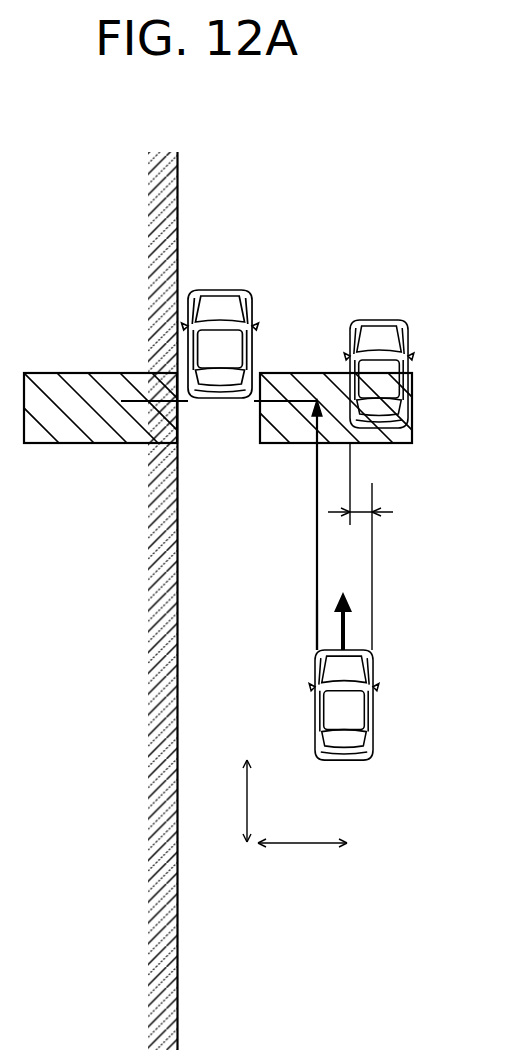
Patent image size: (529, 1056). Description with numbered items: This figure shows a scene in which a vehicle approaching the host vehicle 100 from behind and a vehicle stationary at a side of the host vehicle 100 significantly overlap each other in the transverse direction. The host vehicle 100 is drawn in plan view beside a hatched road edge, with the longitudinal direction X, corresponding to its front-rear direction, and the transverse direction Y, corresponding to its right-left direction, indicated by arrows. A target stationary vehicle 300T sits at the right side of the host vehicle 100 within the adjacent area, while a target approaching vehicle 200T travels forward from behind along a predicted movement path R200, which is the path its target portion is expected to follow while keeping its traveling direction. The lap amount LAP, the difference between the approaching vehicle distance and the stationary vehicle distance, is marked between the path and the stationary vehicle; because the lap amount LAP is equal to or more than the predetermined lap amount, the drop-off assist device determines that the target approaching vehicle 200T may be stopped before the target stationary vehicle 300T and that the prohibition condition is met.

The host vehicle 100 is at (217, 289).
The target stationary vehicle 300T is at (379, 319).
The target approaching vehicle 200T is at (344, 764).
The lap amount LAP is at (360, 511).
The predicted movement path R200 is at (316, 568).
The longitudinal direction X is at (245, 800).
The transverse direction Y is at (302, 846).